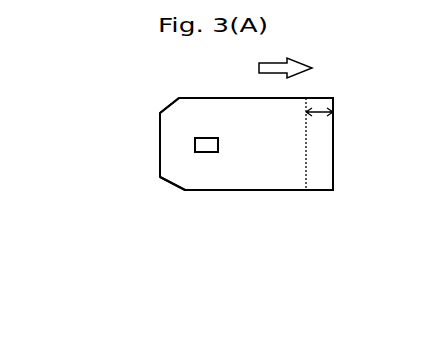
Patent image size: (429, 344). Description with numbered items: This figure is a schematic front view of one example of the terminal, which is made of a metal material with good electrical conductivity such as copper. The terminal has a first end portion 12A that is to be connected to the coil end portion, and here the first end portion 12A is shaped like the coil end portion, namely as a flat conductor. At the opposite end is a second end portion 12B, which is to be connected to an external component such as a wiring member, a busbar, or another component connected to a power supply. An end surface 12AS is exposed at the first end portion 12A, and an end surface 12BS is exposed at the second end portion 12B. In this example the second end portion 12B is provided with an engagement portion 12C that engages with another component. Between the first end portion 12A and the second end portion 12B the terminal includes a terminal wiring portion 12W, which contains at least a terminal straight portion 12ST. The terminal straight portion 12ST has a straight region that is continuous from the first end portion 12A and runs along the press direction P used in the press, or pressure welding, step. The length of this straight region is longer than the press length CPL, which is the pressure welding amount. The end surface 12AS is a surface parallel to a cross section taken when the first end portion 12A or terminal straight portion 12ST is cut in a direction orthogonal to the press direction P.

The first end portion 12A is at (343, 143).
The end surface 12AS is at (333, 172).
The second end portion 12B is at (160, 160).
The end surface 12BS is at (160, 167).
The engagement portion 12C is at (200, 152).
The terminal wiring portion 12W is at (240, 201).
The terminal straight portion 12ST is at (278, 201).
The press length CPL is at (322, 113).
The press direction P is at (285, 58).